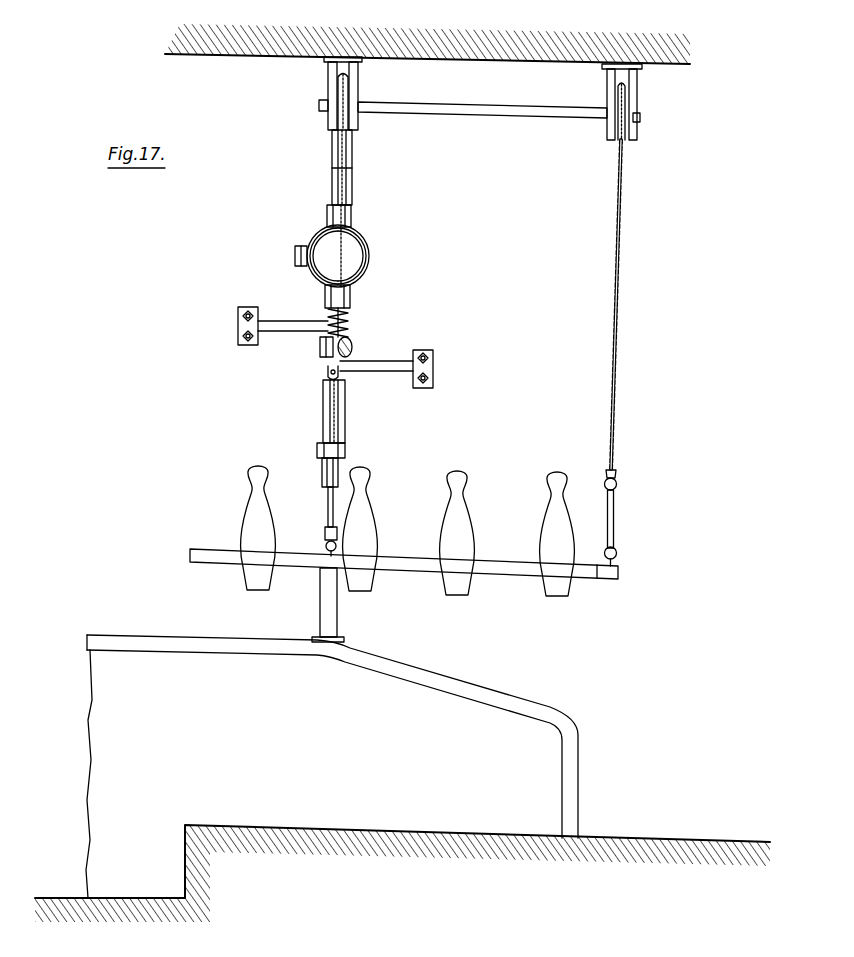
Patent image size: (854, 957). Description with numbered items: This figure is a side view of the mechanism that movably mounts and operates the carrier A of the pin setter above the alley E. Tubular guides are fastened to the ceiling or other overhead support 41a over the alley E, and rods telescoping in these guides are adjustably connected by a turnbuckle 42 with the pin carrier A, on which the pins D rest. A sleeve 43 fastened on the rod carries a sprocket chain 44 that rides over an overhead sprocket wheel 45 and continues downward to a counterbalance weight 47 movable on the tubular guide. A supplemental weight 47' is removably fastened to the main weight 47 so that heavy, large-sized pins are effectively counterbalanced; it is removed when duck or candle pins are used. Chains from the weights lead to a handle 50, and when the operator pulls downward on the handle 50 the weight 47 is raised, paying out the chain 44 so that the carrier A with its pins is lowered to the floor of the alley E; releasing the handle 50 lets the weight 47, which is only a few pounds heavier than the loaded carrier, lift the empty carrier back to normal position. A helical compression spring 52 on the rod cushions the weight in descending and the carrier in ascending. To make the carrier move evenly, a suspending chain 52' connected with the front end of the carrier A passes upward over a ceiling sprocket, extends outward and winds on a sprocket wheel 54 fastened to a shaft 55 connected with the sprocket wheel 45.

The ceiling or other overhead support 41a is at (262, 50).
The overhead sprocket wheel 45 is at (336, 92).
The shaft 55 is at (471, 110).
The sprocket wheel 54 is at (616, 136).
The suspending chain 52' is at (600, 353).
The counterbalance weight 47 is at (355, 246).
The supplemental weight 47' is at (284, 270).
The sprocket chain 44 is at (350, 296).
The helical compression spring 52 is at (308, 326).
The handle 50 is at (321, 350).
The sleeve 43 is at (345, 423).
The turnbuckle 42 is at (328, 508).
The carrier A is at (396, 553).
The pins D is at (542, 539).
The alley E is at (622, 840).